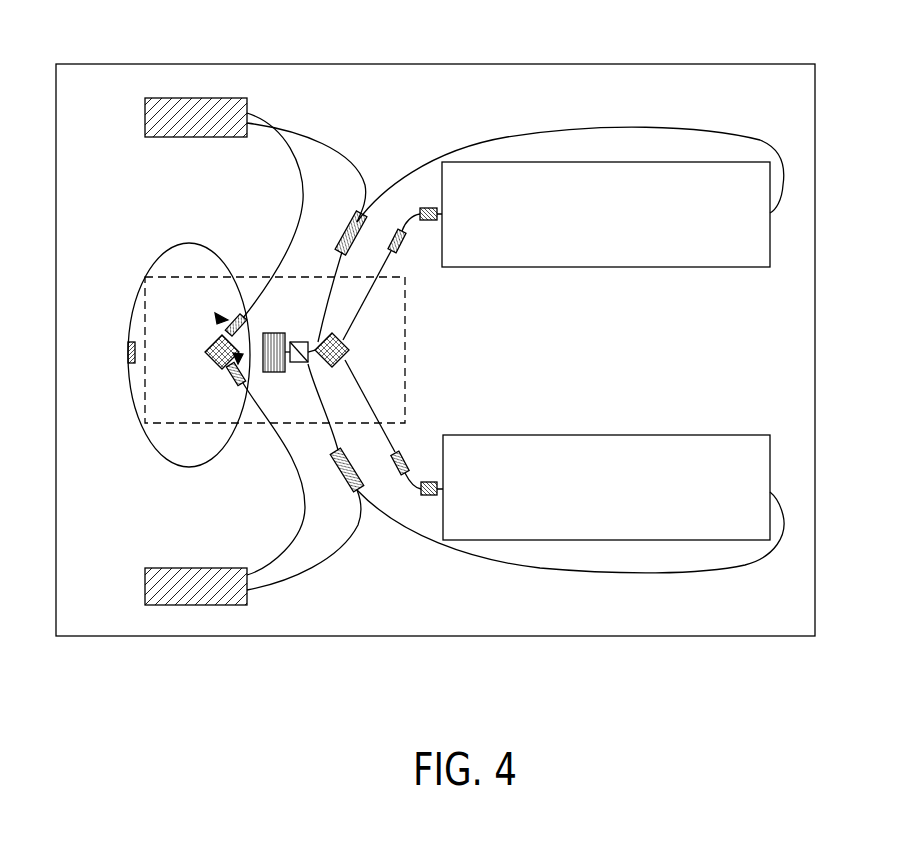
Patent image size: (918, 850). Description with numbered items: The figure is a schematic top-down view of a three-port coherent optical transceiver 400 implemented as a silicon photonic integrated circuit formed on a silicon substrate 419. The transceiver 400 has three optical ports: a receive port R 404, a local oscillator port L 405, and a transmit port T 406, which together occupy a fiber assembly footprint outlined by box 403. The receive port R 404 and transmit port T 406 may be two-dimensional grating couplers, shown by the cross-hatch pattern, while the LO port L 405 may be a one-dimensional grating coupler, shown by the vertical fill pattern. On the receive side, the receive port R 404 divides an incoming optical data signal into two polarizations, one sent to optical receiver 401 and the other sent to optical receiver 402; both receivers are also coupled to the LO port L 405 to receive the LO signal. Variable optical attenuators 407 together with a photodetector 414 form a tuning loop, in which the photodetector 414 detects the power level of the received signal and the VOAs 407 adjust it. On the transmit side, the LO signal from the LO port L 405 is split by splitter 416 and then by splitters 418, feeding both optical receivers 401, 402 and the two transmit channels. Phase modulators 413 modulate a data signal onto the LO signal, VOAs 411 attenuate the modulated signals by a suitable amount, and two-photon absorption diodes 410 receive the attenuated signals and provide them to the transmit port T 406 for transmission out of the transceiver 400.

The coherent optical transceiver 400 is at (702, 644).
The optical receiver 401 is at (194, 610).
The optical receiver 402 is at (247, 112).
The fiber assembly footprint 403 is at (173, 266).
The receive port R 404 is at (207, 352).
The local oscillator port L 405 is at (263, 371).
The transmit port T 406 is at (350, 354).
The variable optical attenuator 407 is at (218, 316).
The two-photon absorption diode 410 is at (405, 253).
The variable optical attenuator 411 is at (430, 222).
The phase modulator 413 is at (607, 268).
The photodetector 414 is at (117, 375).
The splitter 416 is at (302, 342).
The splitter 418 is at (344, 224).
The silicon substrate 419 is at (82, 72).